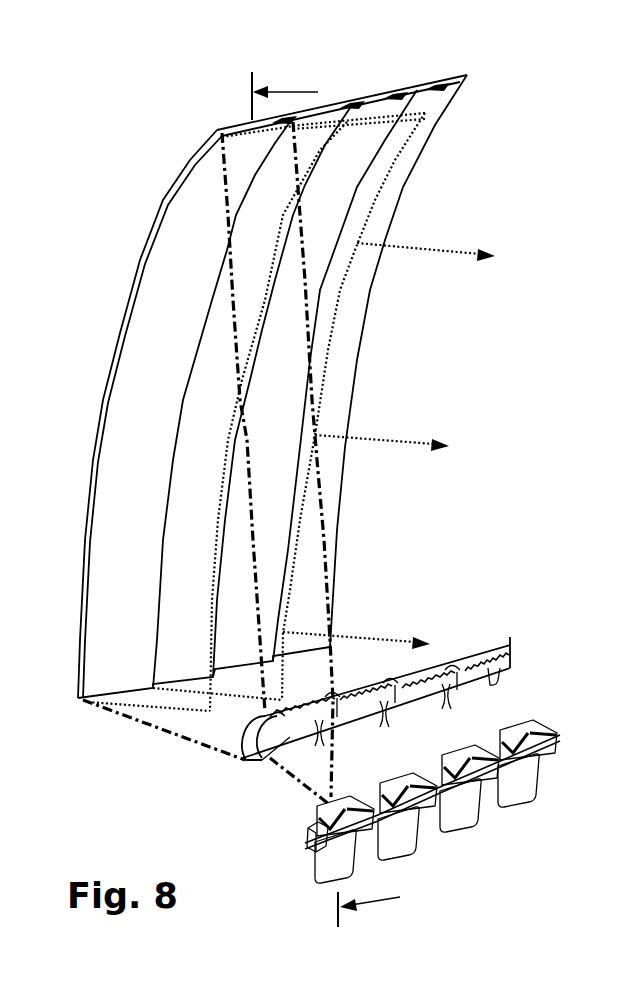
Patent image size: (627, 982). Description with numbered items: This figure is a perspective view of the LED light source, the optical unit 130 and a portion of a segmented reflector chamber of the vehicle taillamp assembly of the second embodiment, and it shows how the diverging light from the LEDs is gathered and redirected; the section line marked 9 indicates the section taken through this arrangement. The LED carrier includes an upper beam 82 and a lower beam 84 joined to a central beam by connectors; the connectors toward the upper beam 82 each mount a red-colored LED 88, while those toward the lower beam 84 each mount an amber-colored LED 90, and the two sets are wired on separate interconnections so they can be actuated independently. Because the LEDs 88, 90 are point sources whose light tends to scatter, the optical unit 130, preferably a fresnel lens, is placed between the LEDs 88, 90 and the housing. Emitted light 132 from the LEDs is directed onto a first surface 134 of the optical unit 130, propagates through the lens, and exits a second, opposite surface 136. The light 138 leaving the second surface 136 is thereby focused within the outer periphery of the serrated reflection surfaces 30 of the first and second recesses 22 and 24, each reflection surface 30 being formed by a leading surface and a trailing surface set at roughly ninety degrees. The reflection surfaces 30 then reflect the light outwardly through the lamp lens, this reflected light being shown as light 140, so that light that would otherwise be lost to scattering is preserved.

The first recess 22 is at (267, 393).
The second recess 24 is at (146, 221).
The serrated reflection surfaces 30 is at (213, 157).
The section line 9- 9 is at (326, 497).
The upper beam 82 is at (553, 743).
The lower beam 84 is at (530, 782).
The red-colored LED 88 is at (495, 730).
The amber-colored LED 90 is at (318, 847).
The optical unit 130 is at (512, 665).
The emitted light 132 is at (298, 788).
The first surface 134 is at (288, 737).
The second surface 136 is at (242, 735).
The light emitted from second surface 138 is at (160, 730).
The reflected light 140 is at (392, 161).